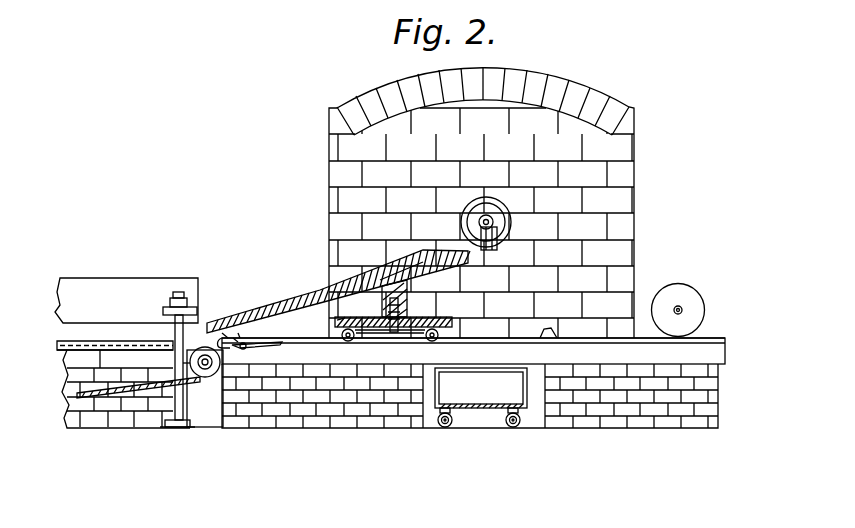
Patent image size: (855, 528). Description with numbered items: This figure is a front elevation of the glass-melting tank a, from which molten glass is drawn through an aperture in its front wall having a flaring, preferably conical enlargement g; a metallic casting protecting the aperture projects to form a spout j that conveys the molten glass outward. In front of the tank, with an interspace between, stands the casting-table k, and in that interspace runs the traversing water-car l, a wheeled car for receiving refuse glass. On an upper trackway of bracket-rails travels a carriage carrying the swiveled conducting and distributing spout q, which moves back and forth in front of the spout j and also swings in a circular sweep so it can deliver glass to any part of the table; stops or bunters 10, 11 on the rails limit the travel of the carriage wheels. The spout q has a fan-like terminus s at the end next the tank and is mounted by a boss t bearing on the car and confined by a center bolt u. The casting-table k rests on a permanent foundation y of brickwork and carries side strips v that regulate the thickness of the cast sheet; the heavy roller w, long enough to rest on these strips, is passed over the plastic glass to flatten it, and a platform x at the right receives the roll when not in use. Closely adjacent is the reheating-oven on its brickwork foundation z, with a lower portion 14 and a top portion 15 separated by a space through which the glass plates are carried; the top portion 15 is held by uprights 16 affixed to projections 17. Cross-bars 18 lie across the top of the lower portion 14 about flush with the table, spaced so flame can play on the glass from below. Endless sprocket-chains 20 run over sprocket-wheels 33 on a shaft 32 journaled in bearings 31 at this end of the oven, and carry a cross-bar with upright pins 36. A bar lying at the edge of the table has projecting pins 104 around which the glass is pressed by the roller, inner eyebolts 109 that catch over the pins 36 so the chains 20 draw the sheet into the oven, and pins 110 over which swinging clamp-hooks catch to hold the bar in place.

The glass-melting tank a is at (498, 202).
The flaring enlargement g is at (505, 210).
The spout j is at (498, 245).
The swiveled conducting and distributing spout q is at (338, 291).
The fan-like terminus s is at (410, 260).
The boss t is at (408, 303).
The center bolt u is at (380, 333).
The stop or bunter 10 is at (337, 323).
The stop or bunter 11 is at (562, 327).
The heavy roller w is at (700, 293).
The casting-table k is at (473, 351).
The side strips v is at (483, 333).
The platform x is at (725, 350).
The permanent foundation y is at (718, 386).
The traversing water-car l is at (481, 397).
The foundation of the reheating-oven z is at (119, 389).
The endless sprocket-chains 20 is at (72, 394).
The lower portion of the oven 14 is at (115, 360).
The cross-bars 18 is at (122, 354).
The shaft 32 is at (183, 363).
The top portion of the oven 15 is at (126, 300).
The uprights 16 is at (177, 410).
The projections 17 is at (197, 309).
The upright projections or pins 36 is at (205, 388).
The bearings 31 is at (208, 378).
The sprocket-wheels 33 is at (238, 350).
The projecting pins 104 is at (238, 333).
The inner eyebolts 109 is at (222, 333).
The pins 110 is at (233, 338).